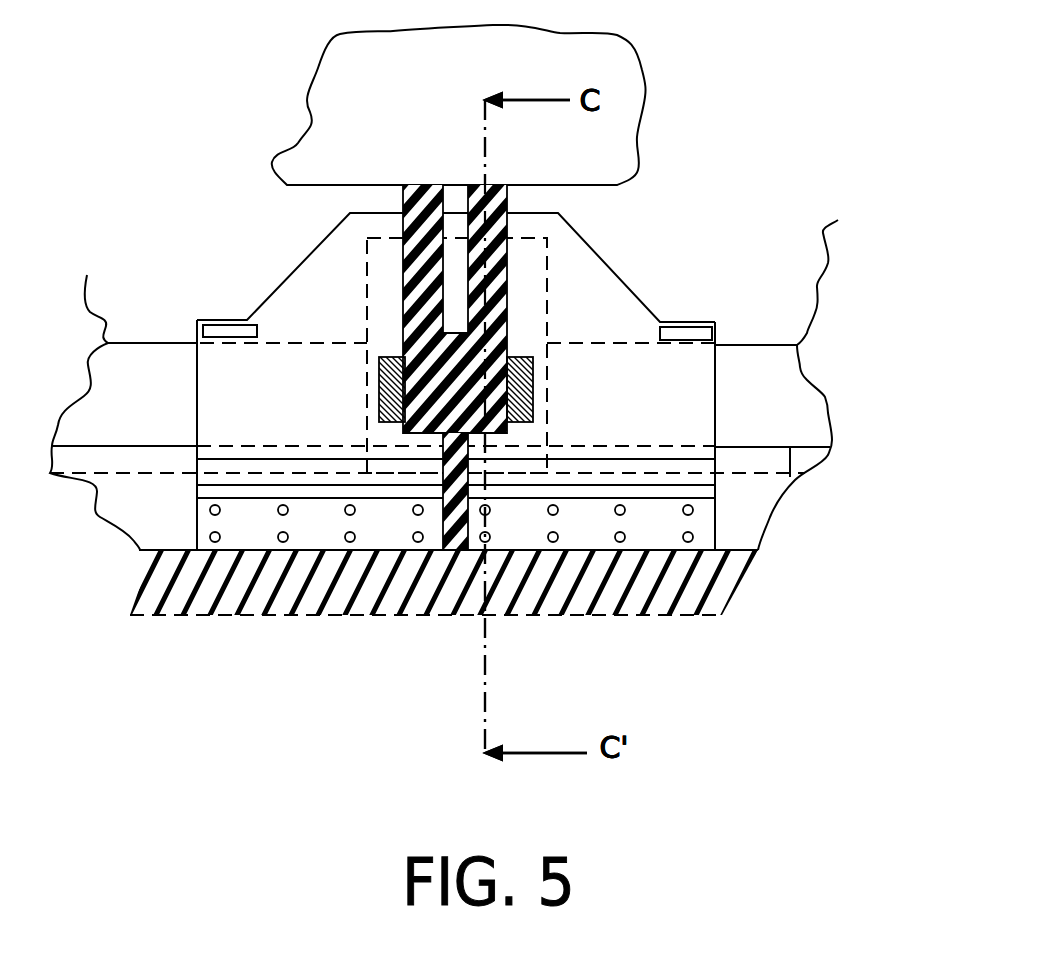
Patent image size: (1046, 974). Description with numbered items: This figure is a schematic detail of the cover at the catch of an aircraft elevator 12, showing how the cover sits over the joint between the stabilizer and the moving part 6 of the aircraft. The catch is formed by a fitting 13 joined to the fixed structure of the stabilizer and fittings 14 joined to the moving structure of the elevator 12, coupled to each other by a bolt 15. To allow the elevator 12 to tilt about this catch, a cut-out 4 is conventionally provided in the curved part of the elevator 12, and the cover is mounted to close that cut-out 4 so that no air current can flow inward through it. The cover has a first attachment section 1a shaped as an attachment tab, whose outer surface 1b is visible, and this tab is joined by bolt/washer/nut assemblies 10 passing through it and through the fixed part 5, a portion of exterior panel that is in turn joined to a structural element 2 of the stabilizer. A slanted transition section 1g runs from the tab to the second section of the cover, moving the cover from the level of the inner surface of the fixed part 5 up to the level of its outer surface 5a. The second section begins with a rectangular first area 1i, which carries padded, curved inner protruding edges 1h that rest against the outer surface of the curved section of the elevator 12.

The first attachment section 1a is at (717, 530).
The outer surface of the first section 1b is at (392, 523).
The transition section 1g is at (345, 292).
The inner protruding edge 1h is at (242, 333).
The first area of the second section 1i is at (197, 397).
The structural element of the vehicle 2 is at (677, 607).
The cut-out 4 is at (383, 280).
The fixed part 5 is at (772, 522).
The outer surface of the fixed part of the vehicle 5a is at (162, 460).
The moving part of the vehicle 6 is at (450, 86).
The means of attaching the first section to the structural element 10 is at (350, 545).
The elevator 12 is at (128, 419).
The fitting on the fixed structure 13 is at (460, 512).
The fittings on the moving structure 14 is at (505, 192).
The bolt 15 is at (527, 362).